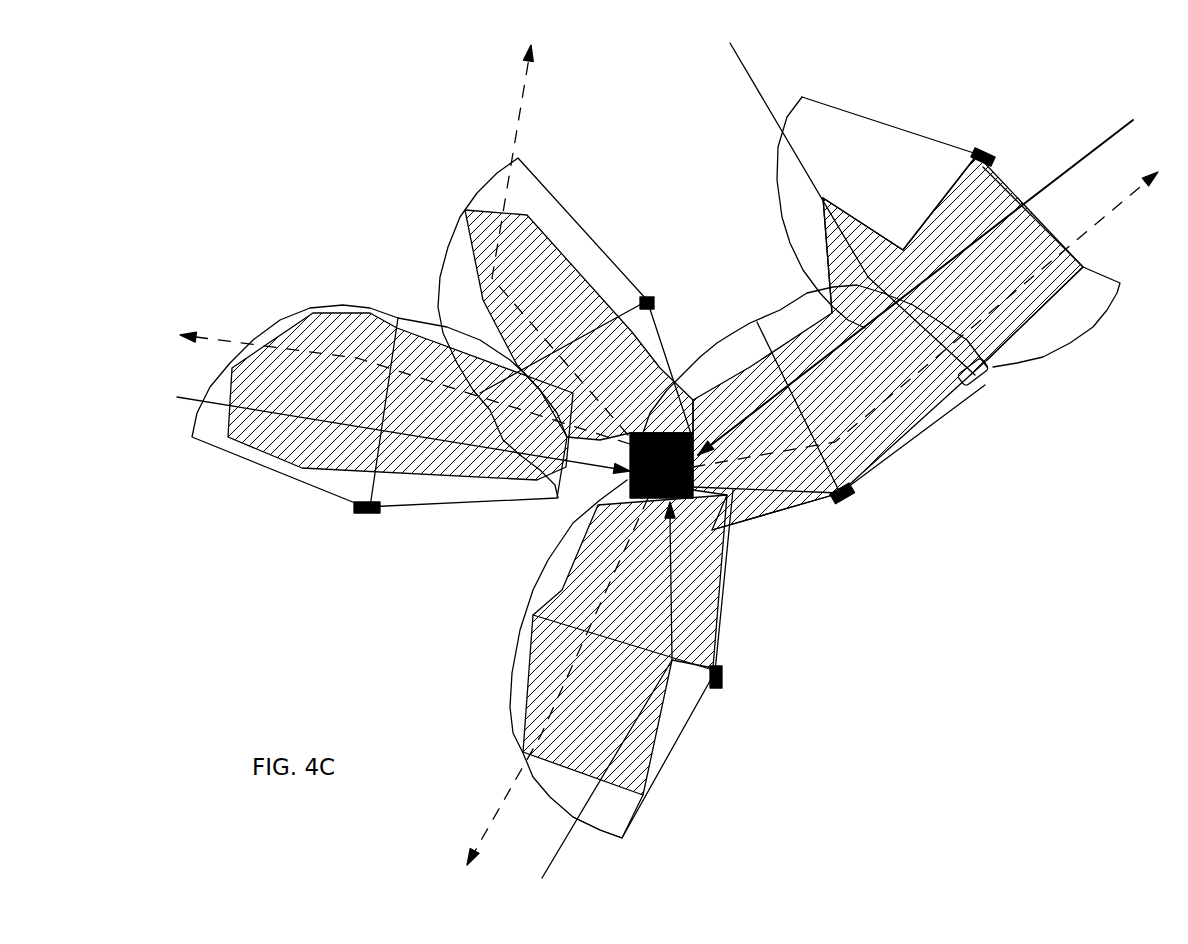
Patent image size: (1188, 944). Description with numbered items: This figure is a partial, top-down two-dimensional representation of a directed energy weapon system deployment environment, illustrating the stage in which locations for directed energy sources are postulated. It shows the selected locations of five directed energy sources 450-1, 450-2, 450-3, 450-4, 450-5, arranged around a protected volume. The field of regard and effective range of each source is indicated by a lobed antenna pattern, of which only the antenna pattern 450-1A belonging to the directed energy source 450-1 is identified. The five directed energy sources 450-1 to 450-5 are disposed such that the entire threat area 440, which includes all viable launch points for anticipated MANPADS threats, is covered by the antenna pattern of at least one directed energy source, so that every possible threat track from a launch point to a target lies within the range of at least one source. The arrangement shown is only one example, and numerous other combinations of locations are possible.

The threat area 440 is at (968, 390).
The directed energy source 450-1 is at (718, 686).
The antenna pattern 450-1A is at (630, 822).
The directed energy source 450-2 is at (845, 498).
The directed energy source 450-3 is at (355, 512).
The directed energy source 450-4 is at (648, 296).
The directed energy source 450-5 is at (979, 150).